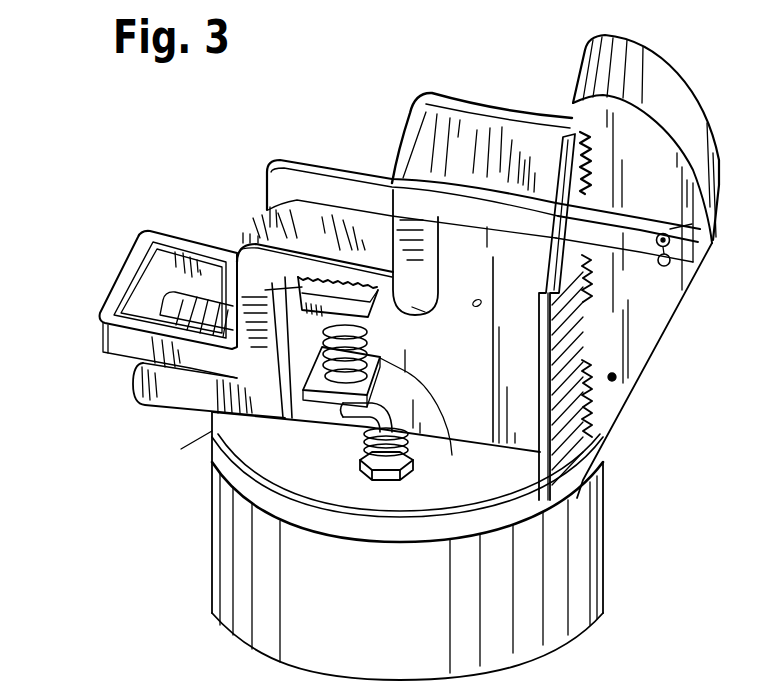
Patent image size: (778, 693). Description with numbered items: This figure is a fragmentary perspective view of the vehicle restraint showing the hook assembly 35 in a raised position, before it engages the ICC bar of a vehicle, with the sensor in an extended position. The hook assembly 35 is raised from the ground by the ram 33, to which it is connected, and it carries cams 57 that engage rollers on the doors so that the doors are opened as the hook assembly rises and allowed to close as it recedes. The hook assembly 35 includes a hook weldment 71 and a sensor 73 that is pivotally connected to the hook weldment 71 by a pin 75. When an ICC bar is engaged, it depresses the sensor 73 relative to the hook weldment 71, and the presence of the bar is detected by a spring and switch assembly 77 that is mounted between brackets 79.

The ram 33 is at (408, 617).
The hook assembly 35 is at (118, 203).
The cam 57 is at (583, 283).
The hook weldment 71 is at (640, 340).
The sensor 73 is at (117, 344).
The pin 75 is at (676, 241).
The spring and switch assembly 77 is at (322, 350).
The bracket 79 is at (387, 317).